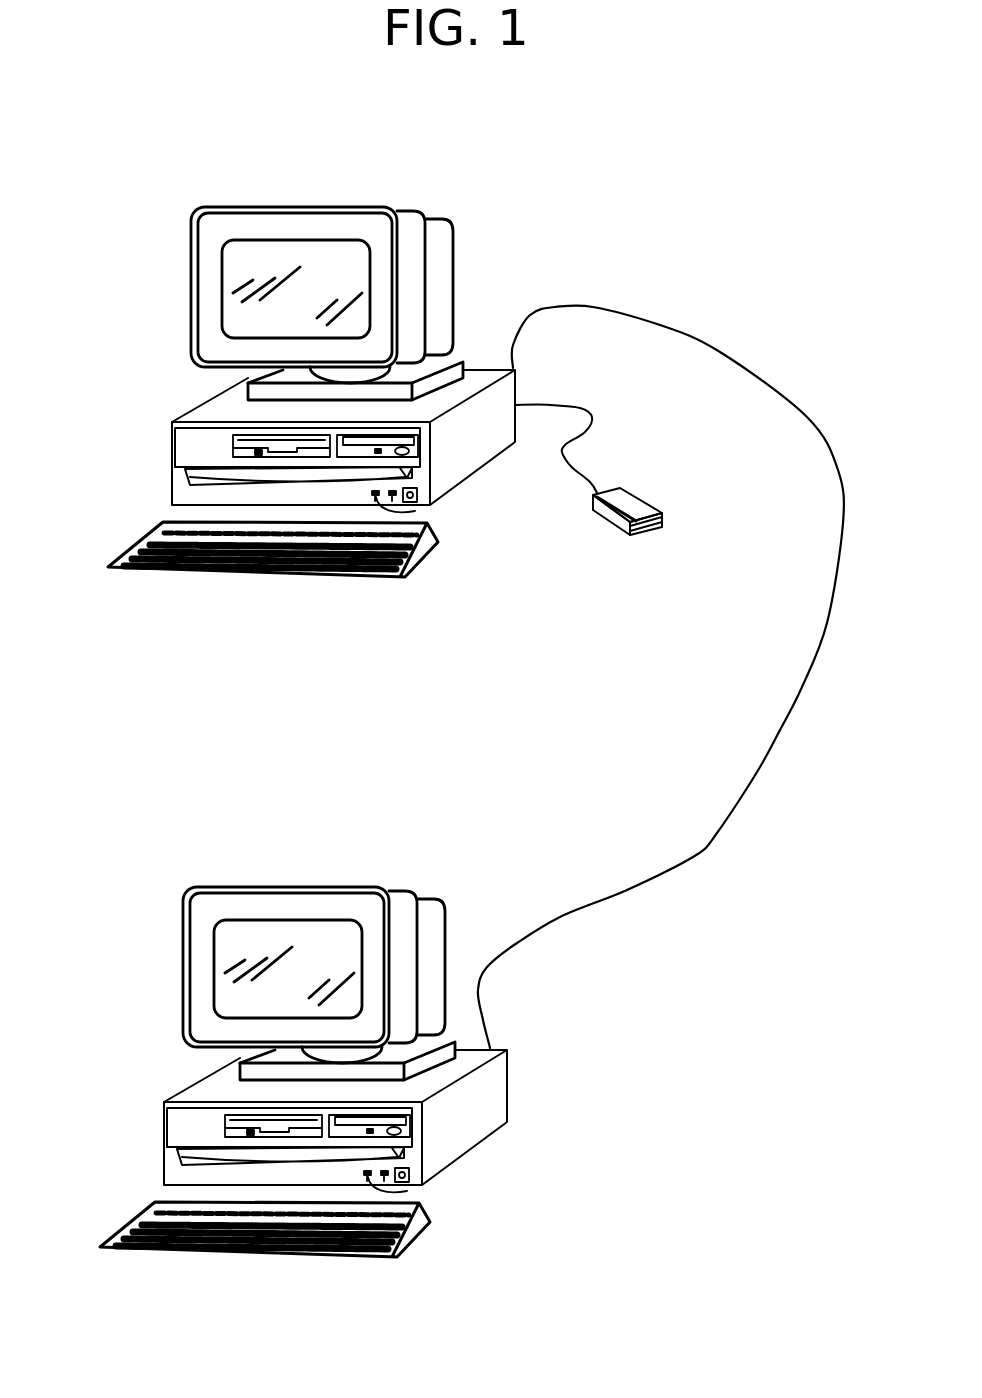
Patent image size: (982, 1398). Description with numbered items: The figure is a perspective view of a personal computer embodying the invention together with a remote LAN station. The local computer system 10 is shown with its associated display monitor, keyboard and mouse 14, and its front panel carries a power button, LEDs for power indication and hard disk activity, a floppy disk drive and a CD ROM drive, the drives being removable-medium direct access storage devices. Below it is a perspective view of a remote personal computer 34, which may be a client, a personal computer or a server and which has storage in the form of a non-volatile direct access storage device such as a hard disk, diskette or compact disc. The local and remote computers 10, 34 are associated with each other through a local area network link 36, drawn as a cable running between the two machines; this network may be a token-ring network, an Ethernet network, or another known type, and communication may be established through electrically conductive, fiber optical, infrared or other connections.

The computer system 10 is at (140, 179).
The mouse 14 is at (637, 490).
The remote personal computer 34 is at (140, 861).
The link 36 is at (802, 683).